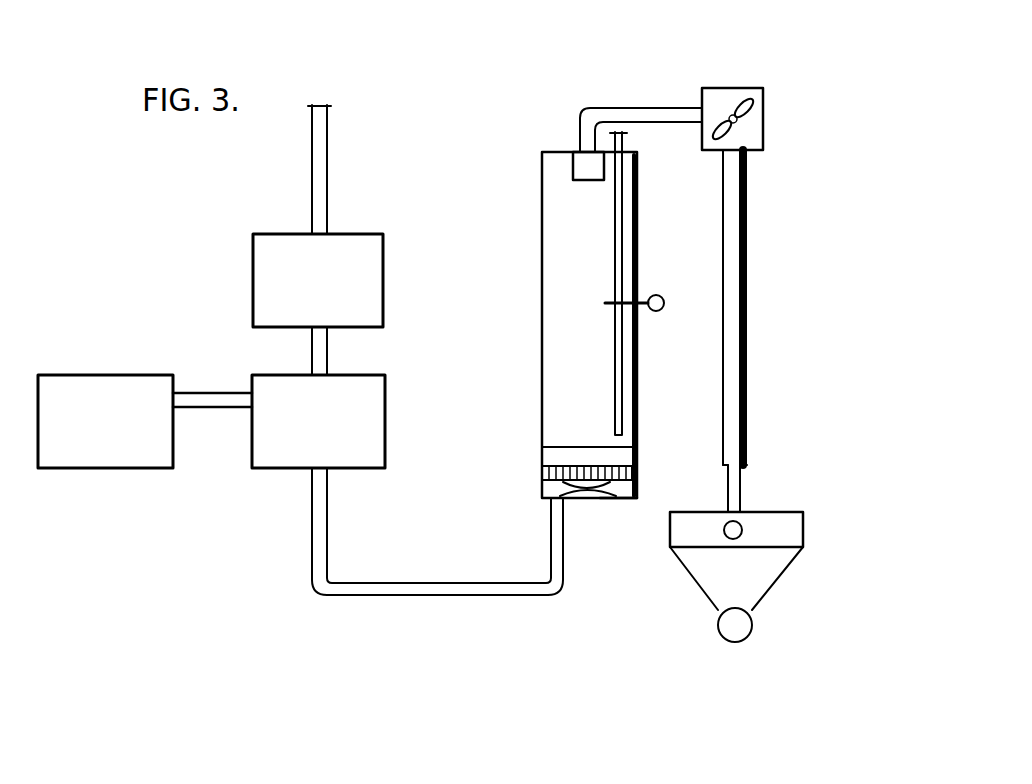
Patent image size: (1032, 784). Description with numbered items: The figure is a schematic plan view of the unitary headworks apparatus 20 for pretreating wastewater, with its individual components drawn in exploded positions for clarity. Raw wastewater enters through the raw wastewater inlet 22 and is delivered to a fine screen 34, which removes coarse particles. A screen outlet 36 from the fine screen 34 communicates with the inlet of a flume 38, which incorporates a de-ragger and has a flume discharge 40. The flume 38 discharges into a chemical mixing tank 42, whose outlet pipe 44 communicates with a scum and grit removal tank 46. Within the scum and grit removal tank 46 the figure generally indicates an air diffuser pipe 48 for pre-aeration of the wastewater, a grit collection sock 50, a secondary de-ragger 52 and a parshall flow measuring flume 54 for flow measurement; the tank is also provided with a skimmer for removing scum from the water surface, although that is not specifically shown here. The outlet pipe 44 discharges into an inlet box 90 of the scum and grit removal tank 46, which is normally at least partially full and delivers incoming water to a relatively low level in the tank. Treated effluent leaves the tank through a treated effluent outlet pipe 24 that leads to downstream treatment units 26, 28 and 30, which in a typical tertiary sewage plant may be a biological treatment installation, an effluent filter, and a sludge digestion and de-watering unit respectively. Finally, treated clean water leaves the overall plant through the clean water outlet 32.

The unitary headworks apparatus 20 is at (572, 660).
The raw wastewater inlet 22 is at (743, 531).
The treated effluent outlet pipe 24 is at (412, 595).
The downstream treatment unit 26 is at (263, 435).
The downstream treatment unit 28 is at (268, 272).
The downstream treatment unit 30 is at (100, 392).
The clean water outlet 32 is at (328, 145).
The fine screen 34 is at (785, 588).
The screen outlet 36 is at (725, 512).
The flume 38 is at (748, 356).
The flume discharge 40 is at (745, 155).
The chemical mixing tank 42 is at (760, 110).
The outlet pipe 44 is at (660, 108).
The scum and grit removal tank 46 is at (542, 313).
The air diffuser pipe 48 is at (628, 195).
The grit collection sock 50 is at (657, 311).
The secondary de-ragger 52 is at (538, 472).
The parshall flow measuring flume 54 is at (630, 490).
The inlet box 90 is at (590, 181).